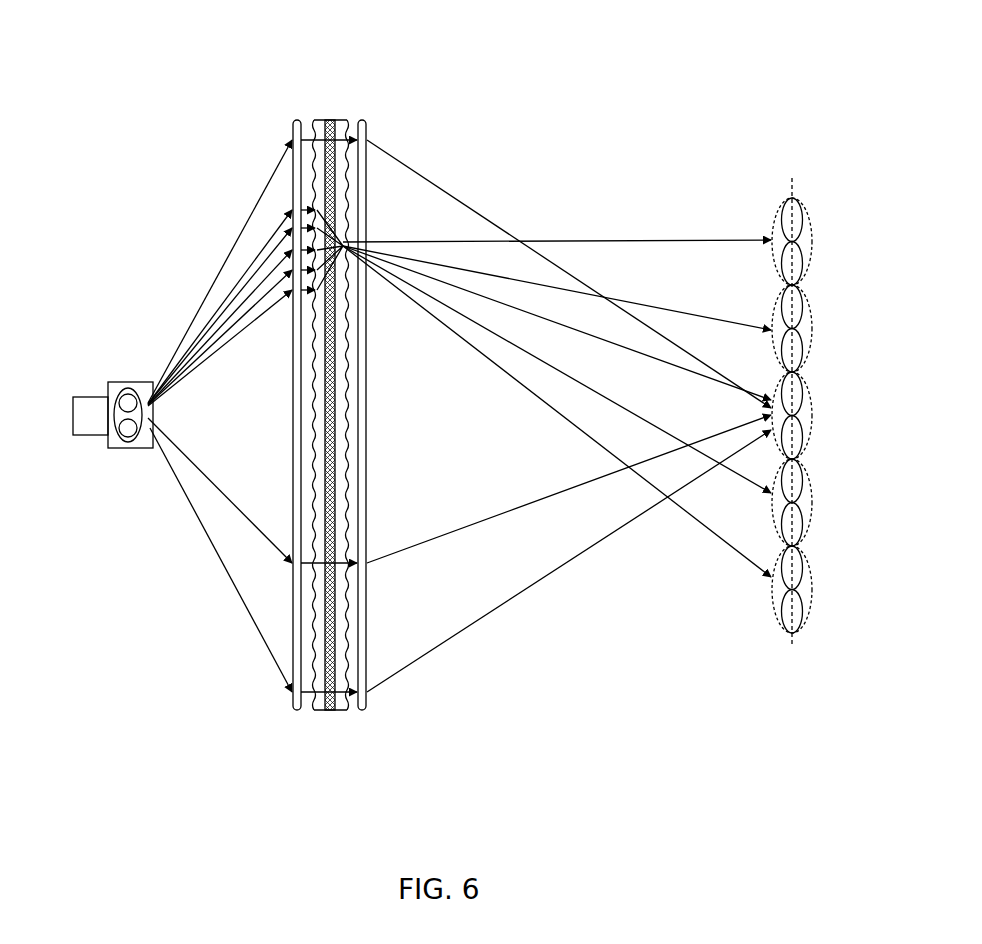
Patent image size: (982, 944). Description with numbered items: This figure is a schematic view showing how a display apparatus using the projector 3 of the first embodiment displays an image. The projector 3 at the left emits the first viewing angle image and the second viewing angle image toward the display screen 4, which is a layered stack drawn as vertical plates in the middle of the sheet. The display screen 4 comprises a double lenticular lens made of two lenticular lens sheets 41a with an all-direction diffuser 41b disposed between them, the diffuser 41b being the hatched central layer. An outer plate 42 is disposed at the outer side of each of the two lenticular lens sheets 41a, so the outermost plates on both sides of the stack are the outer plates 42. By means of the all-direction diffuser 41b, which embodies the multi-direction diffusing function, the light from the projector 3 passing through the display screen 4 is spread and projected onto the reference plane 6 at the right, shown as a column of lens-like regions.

The projector 3 is at (83, 397).
The display screen 4 is at (372, 44).
The lenticular lens sheets 41a is at (316, 120).
The all-direction diffuser 41b is at (330, 120).
The outer plate 42 is at (297, 120).
The reference plane 6 is at (790, 180).